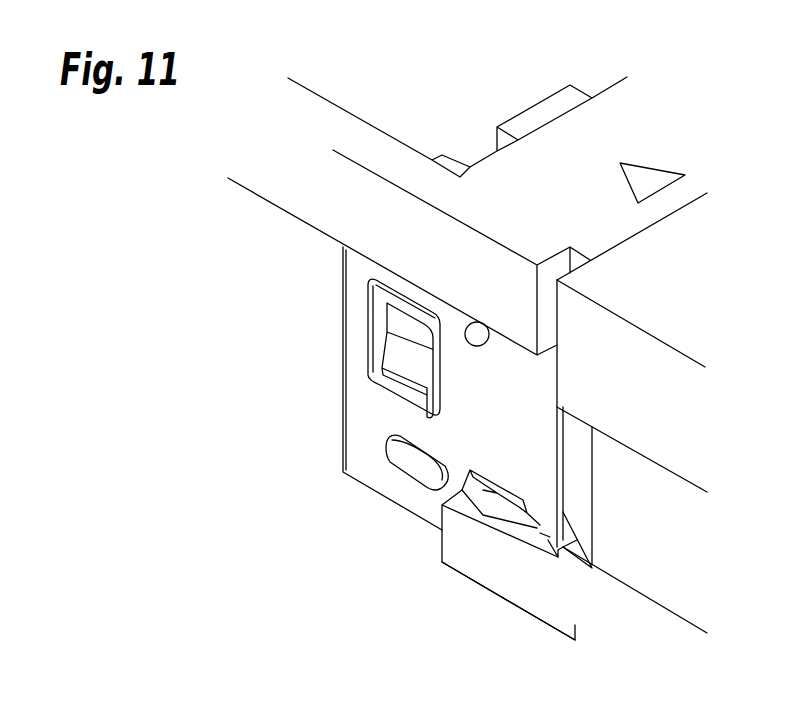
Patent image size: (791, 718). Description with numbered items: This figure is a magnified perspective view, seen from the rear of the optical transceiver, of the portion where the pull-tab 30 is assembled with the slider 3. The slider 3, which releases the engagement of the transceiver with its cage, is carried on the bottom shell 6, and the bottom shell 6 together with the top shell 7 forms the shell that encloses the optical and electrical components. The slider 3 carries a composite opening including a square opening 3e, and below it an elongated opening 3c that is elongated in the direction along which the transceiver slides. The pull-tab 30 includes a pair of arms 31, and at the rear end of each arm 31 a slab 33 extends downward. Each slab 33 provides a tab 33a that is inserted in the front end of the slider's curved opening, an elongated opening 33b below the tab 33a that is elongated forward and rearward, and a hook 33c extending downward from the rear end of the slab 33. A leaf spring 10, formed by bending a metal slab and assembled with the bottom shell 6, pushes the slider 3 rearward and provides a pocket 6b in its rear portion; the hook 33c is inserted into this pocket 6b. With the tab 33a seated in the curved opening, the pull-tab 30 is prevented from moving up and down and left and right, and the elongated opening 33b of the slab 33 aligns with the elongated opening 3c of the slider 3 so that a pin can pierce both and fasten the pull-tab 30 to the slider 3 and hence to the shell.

The pull-tab 30 is at (342, 108).
The arm 31 is at (287, 178).
The slab 33 is at (344, 472).
The tab 33a is at (386, 316).
The elongated opening 33b is at (407, 490).
The hook 33c is at (552, 545).
The square opening 3e is at (407, 318).
The elongated opening 3c is at (388, 465).
The leaf spring 10 is at (510, 535).
The bottom shell 6 is at (513, 612).
The pocket 6b is at (573, 523).
The top shell 7 is at (618, 366).
The slider 3 is at (661, 553).